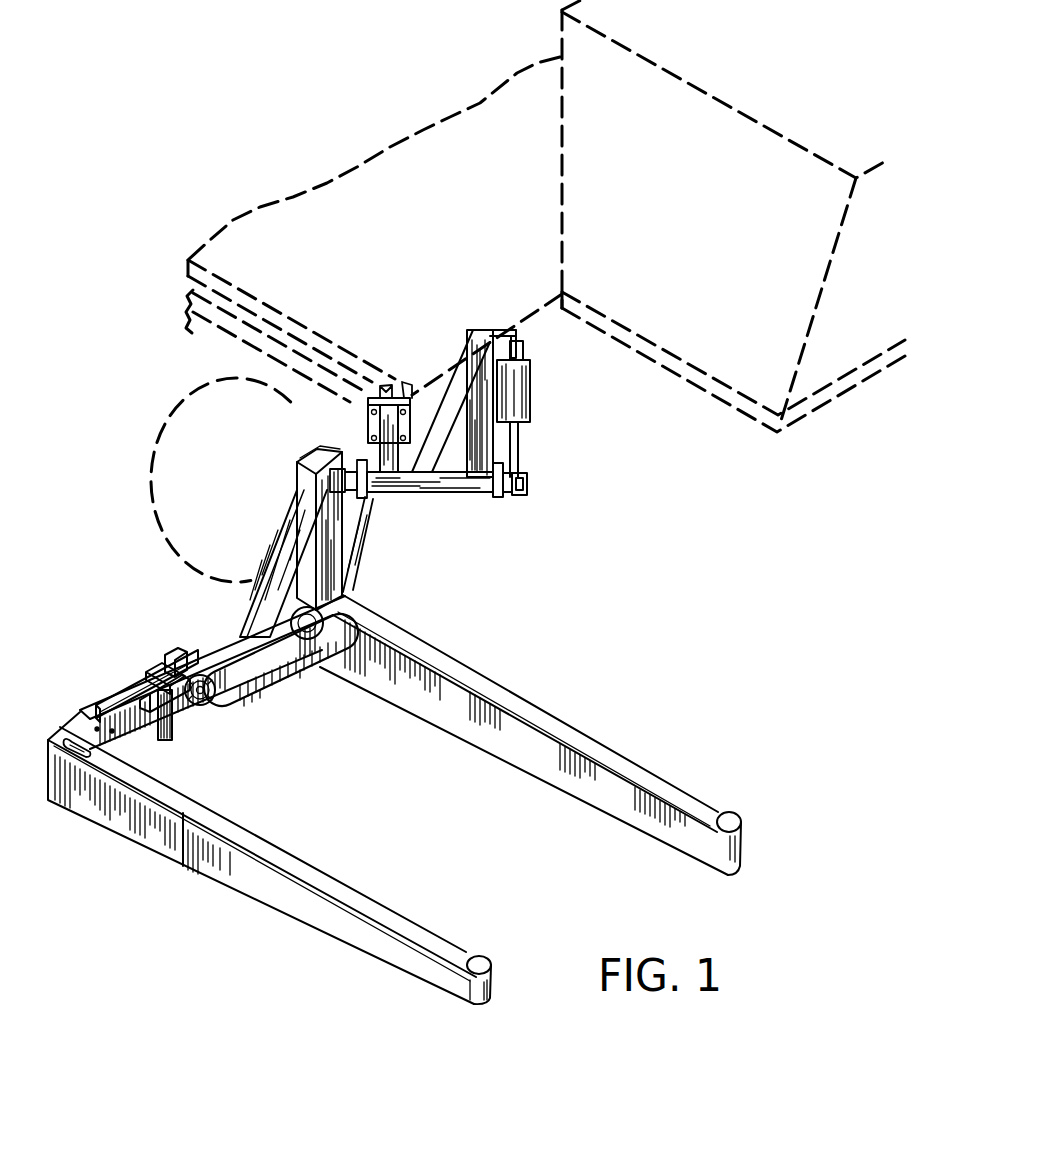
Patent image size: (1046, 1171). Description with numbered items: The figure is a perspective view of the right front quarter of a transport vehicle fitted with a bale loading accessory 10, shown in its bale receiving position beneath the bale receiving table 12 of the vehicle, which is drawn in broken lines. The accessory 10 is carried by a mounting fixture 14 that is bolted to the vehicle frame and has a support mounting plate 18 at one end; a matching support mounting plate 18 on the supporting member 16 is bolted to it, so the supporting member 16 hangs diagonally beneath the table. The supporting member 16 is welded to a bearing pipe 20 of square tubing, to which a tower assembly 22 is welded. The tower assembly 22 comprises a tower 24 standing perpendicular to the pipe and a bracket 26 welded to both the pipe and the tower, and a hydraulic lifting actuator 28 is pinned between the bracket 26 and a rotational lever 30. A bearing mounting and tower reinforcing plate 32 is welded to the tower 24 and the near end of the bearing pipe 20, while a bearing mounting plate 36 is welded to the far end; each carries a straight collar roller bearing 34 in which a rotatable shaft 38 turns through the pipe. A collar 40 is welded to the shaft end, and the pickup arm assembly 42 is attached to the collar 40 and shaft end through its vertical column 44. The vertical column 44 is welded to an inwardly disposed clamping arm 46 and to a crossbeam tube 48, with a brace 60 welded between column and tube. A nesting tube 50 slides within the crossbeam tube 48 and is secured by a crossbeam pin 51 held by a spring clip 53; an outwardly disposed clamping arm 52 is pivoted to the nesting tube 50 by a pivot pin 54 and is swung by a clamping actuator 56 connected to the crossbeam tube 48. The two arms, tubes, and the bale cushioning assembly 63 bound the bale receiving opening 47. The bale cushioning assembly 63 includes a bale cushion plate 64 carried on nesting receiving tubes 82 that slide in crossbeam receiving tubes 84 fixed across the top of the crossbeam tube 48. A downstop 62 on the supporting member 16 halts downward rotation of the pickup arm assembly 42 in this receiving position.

The bale loading accessory 10 is at (598, 570).
The bale receiving table 12 is at (417, 288).
The mounting fixture 14 is at (390, 392).
The supporting member 16 is at (402, 458).
The support mounting plate 18 is at (404, 395).
The bearing pipe 20 is at (410, 488).
The tower assembly 22 is at (499, 320).
The tower 24 is at (467, 432).
The bracket 26 is at (467, 344).
The lifting actuator 28 is at (530, 396).
The rotational lever 30 is at (513, 497).
The bearing mounting and tower reinforcing plate 32 is at (493, 499).
The straight collar roller bearing 34 is at (504, 498).
The bearing mounting plate 36 is at (373, 491).
The rotatable shaft 38 is at (340, 470).
The collar 40 is at (315, 452).
The pickup arm assembly 42 is at (255, 528).
The vertical column 44 is at (341, 566).
The inwardly disposed clamping arm 46 is at (507, 700).
The bale receiving opening 47 is at (434, 824).
The crossbeam tube 48 is at (190, 723).
The nesting tube 50 is at (143, 743).
The crossbeam pin 51 is at (140, 704).
The outwardly disposed clamping arm 52 is at (303, 867).
The spring clip 53 is at (153, 680).
The pivot pin 54 is at (63, 737).
The clamping actuator 56 is at (117, 692).
The brace 60 is at (262, 583).
The downstop 62 is at (353, 525).
The bale cushioning assembly 63 is at (284, 733).
The bale cushion plate 64 is at (262, 692).
The nesting receiving tube 82 is at (158, 670).
The crossbeam receiving tube 84 is at (173, 663).